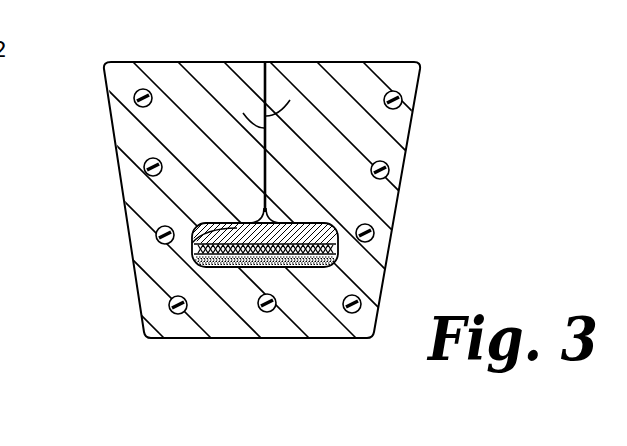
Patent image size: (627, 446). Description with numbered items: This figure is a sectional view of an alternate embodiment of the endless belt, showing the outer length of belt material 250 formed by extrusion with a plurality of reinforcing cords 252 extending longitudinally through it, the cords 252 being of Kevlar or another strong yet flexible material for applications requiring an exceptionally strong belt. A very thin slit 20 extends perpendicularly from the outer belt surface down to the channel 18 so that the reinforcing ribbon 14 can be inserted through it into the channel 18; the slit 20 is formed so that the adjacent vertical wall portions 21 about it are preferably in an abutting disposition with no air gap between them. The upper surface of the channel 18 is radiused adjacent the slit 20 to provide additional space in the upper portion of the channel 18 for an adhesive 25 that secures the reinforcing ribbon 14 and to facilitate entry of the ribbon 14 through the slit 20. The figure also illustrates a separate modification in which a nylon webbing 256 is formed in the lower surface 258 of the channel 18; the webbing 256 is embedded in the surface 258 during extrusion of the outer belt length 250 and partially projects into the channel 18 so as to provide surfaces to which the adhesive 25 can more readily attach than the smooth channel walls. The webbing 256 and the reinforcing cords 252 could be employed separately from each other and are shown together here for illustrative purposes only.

The outer length of belt material 250 is at (423, 82).
The reinforcing cords 252 is at (144, 166).
The slit 20 is at (265, 62).
The vertical wall portions 21 is at (243, 113).
The channel 18 is at (206, 223).
The reinforcing ribbon 14 is at (194, 234).
The adhesive 25 is at (338, 242).
The nylon webbing 256 is at (336, 266).
The lower surface of channel 258 is at (273, 266).